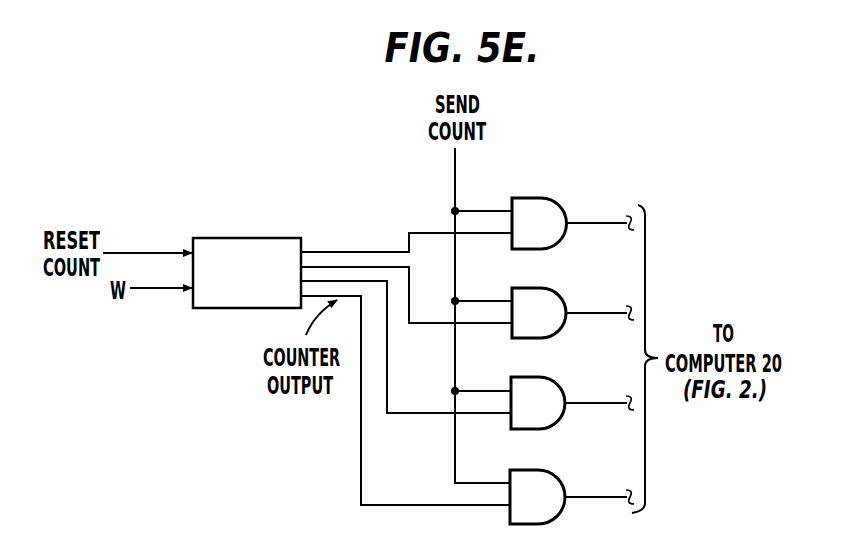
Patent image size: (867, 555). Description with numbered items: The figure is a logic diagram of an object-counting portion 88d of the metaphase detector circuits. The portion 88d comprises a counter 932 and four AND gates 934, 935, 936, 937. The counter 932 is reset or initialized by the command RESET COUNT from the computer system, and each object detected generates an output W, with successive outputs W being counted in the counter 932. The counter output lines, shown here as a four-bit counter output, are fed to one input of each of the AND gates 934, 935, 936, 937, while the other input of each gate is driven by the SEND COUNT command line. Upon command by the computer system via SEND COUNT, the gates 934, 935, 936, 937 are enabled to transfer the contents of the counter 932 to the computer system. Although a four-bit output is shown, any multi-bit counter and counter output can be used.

The counter 932 is at (293, 238).
The AND gate 934 is at (556, 198).
The AND gate 935 is at (560, 290).
The AND gate 936 is at (556, 386).
The AND gate 937 is at (556, 476).
The object-counting portion 88d is at (575, 145).